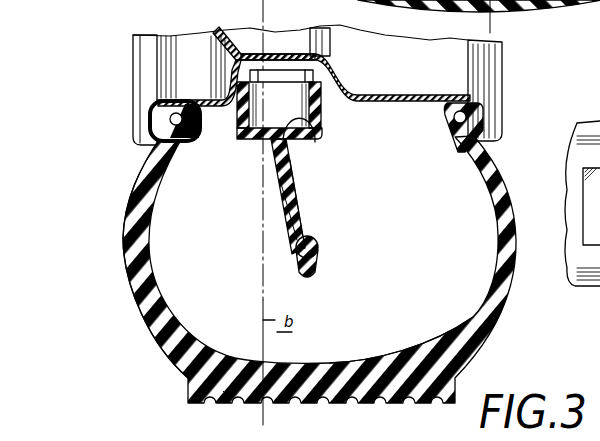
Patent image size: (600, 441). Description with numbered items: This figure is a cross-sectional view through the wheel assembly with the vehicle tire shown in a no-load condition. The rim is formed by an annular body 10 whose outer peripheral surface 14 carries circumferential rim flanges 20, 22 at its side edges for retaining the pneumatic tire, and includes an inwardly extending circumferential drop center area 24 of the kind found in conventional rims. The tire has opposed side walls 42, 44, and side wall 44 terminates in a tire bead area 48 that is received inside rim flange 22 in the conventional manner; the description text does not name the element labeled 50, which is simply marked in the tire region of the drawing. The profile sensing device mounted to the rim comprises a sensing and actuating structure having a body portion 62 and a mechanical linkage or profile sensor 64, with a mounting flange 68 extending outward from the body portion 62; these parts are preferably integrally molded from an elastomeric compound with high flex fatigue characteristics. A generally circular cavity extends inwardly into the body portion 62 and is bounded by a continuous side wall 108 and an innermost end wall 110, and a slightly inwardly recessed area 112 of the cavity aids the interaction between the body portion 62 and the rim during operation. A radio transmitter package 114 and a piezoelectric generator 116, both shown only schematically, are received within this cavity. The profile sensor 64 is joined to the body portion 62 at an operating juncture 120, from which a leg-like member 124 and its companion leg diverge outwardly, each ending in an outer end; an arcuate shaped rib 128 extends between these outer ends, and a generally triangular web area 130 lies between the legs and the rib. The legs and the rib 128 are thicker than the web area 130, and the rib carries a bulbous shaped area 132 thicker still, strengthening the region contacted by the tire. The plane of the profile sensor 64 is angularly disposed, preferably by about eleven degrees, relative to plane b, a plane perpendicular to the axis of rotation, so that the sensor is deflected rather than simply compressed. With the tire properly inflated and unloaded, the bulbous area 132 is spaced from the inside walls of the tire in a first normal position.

The annular body 10 is at (419, 60).
The outer peripheral surface 14 is at (433, 97).
The circumferential rim flange 20 is at (481, 118).
The circumferential rim flange 22 is at (153, 127).
The drop center area 24 is at (313, 62).
The side wall 42 is at (490, 170).
The side wall 44 is at (128, 229).
The tire bead area 48 is at (186, 121).
The chamber 50 is at (450, 265).
The body portion 62 is at (229, 108).
The profile sensor 64 is at (257, 188).
The mounting flange 68 is at (597, 132).
The side wall 108 is at (313, 92).
The end wall 110 is at (316, 120).
The recessed area 112 is at (322, 66).
The radio transmitter package 114 is at (243, 133).
The piezoelectric generator 116 is at (262, 58).
The operating juncture 120 is at (283, 157).
The leg-like member 124 is at (288, 185).
The arcuate shaped rib 128 is at (313, 275).
The triangular web area 130 is at (288, 218).
The bulbous shaped area 132 is at (318, 248).